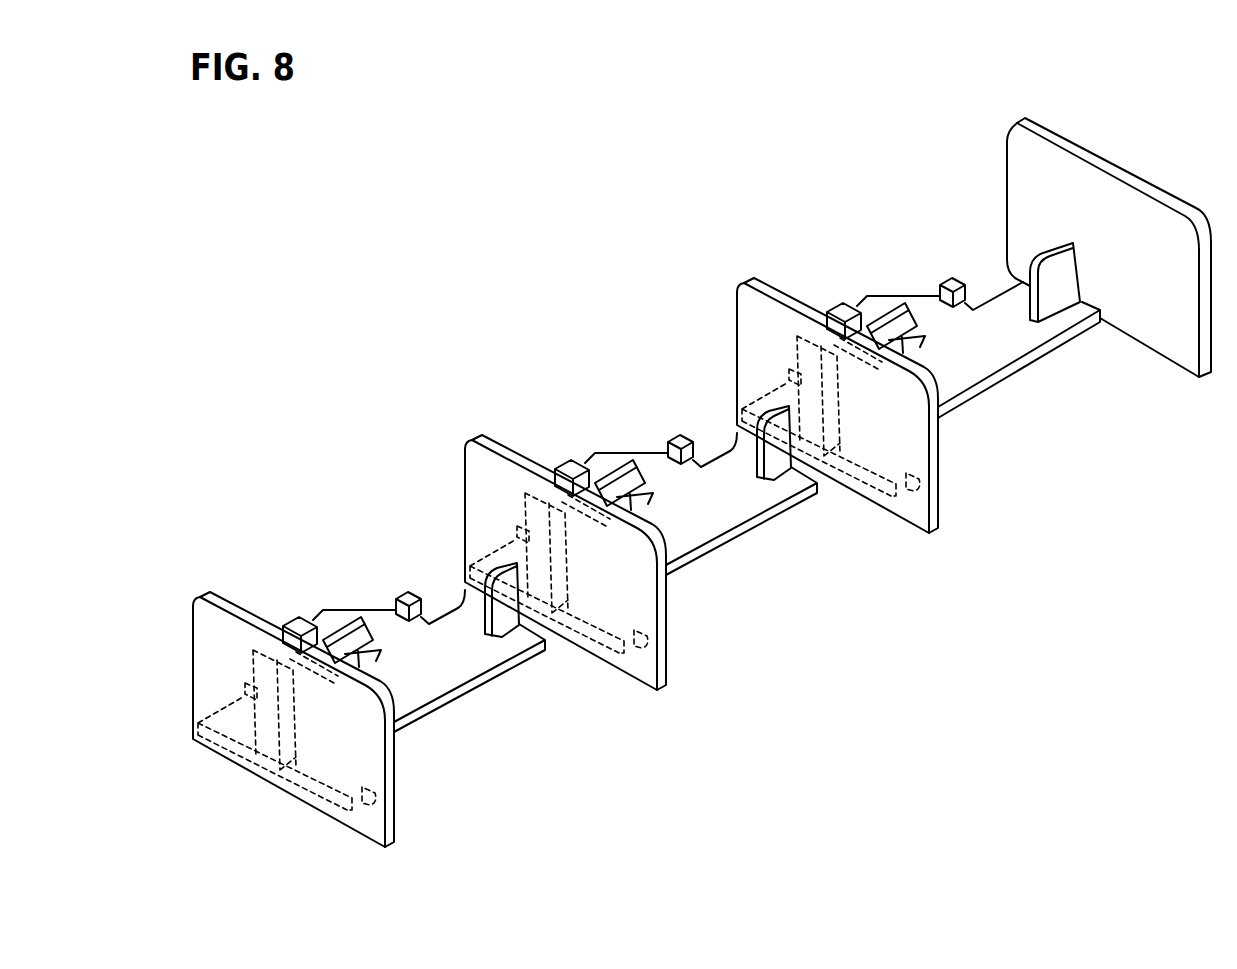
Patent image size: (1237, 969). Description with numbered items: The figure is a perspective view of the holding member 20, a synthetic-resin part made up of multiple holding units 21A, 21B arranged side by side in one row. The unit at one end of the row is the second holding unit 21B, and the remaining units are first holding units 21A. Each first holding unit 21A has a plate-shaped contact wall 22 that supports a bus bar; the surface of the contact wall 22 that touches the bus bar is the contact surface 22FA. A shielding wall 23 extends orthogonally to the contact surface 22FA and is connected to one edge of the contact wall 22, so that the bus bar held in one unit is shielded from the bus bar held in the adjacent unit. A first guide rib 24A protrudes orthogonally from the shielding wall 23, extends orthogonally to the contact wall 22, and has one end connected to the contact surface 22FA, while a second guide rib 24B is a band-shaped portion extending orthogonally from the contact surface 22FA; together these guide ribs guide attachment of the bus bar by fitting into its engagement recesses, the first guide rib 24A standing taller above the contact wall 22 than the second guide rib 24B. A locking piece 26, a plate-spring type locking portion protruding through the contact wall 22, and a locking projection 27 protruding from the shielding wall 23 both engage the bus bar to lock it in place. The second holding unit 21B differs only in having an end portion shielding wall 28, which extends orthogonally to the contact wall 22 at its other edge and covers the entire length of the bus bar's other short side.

The holding member 20 is at (896, 127).
The first holding unit 21A is at (593, 530).
The second holding unit 21B is at (918, 426).
The contact wall 22 is at (716, 483).
The contact surface 22FA is at (675, 533).
The shielding wall 23 is at (487, 472).
The first guide rib 24A is at (567, 617).
The second guide rib 24B is at (779, 452).
The locking piece 26 is at (623, 482).
The locking projection 27 is at (653, 635).
The end portion shielding wall 28 is at (1138, 228).